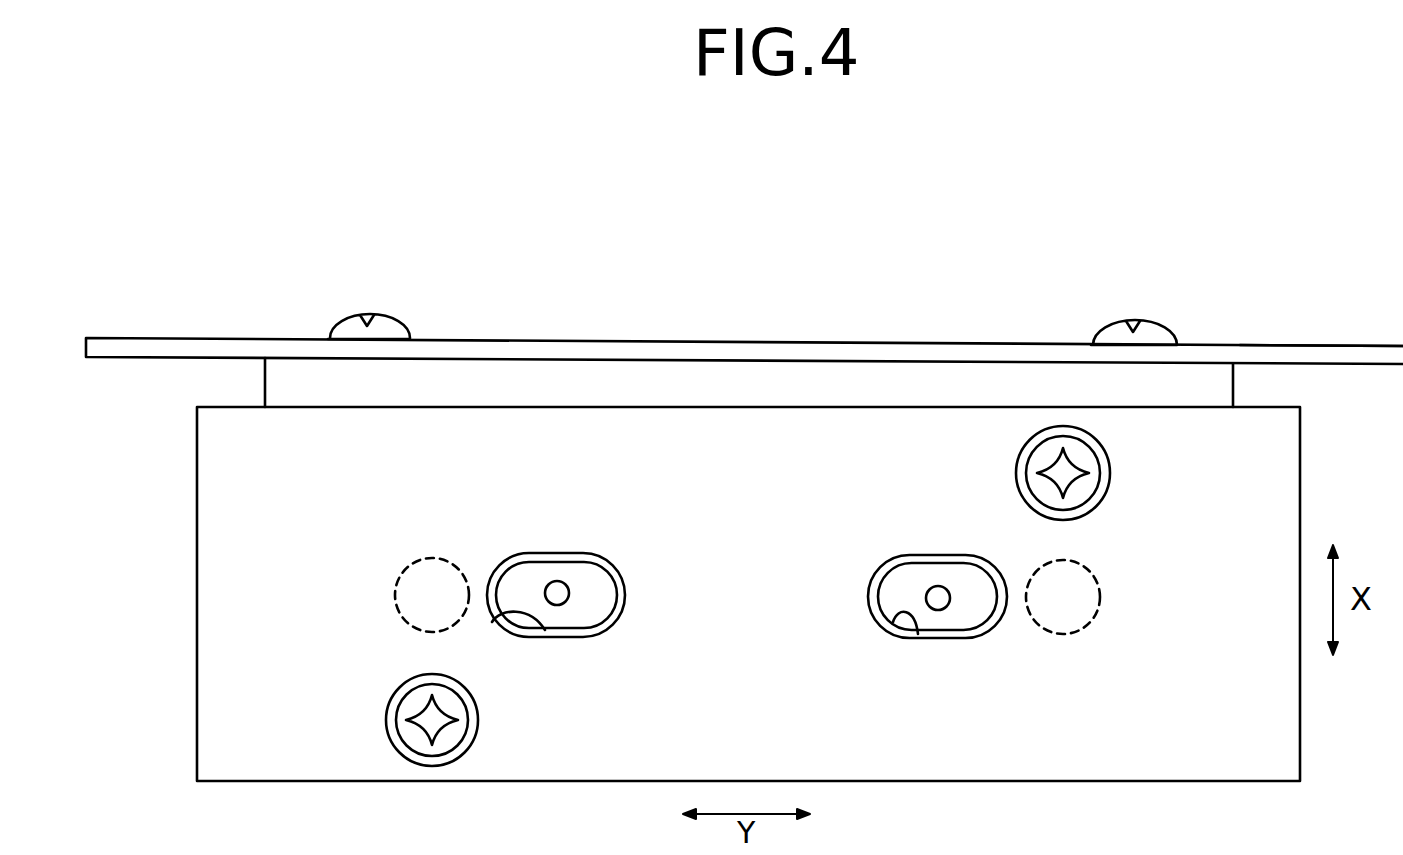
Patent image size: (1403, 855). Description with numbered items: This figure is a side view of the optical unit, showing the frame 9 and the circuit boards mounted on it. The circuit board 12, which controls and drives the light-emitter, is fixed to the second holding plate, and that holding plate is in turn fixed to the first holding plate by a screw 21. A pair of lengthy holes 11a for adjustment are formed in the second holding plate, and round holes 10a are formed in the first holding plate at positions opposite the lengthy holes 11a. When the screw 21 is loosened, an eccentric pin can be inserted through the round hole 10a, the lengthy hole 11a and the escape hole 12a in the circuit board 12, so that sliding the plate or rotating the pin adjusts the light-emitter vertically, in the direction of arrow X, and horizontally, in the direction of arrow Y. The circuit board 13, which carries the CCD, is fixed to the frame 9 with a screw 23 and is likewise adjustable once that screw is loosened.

The frame 9 is at (550, 370).
The round hole 10a is at (557, 581).
The lengthy hole for adjustment 11a is at (545, 632).
The circuit board 12 is at (1285, 452).
The escape hole 12a is at (613, 558).
The circuit board 13 is at (1297, 345).
The screw 21 is at (402, 575).
The screw 23 is at (367, 316).